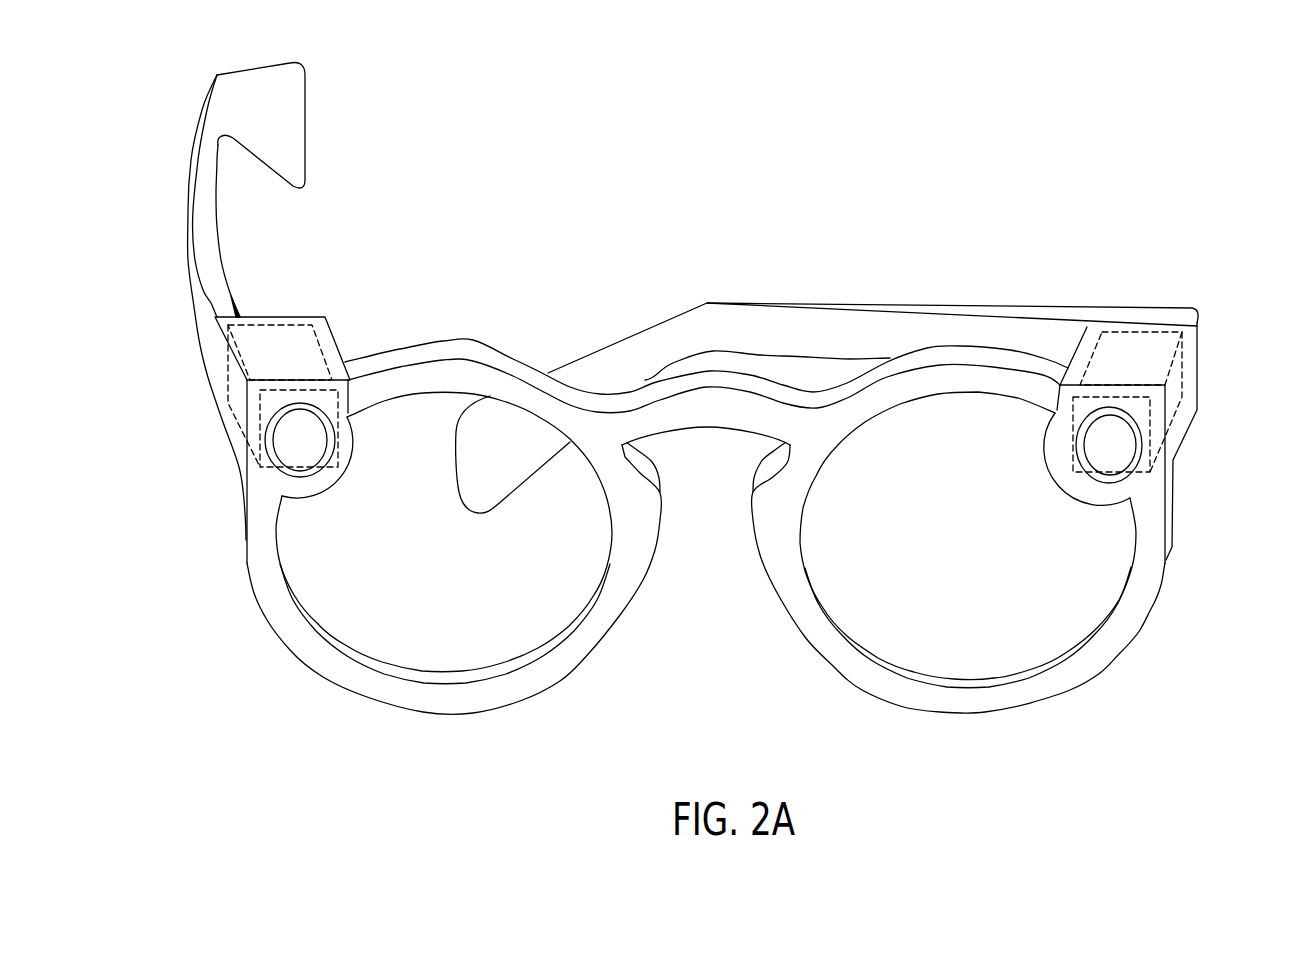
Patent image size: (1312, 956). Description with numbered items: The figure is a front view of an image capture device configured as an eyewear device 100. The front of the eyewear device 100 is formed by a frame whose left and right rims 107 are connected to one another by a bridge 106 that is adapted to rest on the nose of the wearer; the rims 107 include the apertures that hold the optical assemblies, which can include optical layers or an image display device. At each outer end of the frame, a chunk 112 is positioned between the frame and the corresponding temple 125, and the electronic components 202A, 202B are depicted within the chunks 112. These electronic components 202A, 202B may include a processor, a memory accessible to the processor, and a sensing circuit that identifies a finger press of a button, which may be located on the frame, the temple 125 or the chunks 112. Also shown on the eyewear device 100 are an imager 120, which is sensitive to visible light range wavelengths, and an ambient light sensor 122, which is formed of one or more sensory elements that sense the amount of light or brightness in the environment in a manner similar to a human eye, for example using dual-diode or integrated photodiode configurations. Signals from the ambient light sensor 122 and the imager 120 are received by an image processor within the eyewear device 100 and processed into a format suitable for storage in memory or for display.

The eyewear device 100 is at (721, 425).
The bridge 106 is at (683, 370).
The rim 107 is at (1128, 626).
The chunk 112 is at (343, 327).
The imager 120 is at (1115, 467).
The ambient light sensor 122 is at (297, 442).
The temple 125 is at (955, 300).
The electronic component 202A is at (228, 405).
The electronic component 202B is at (1190, 405).